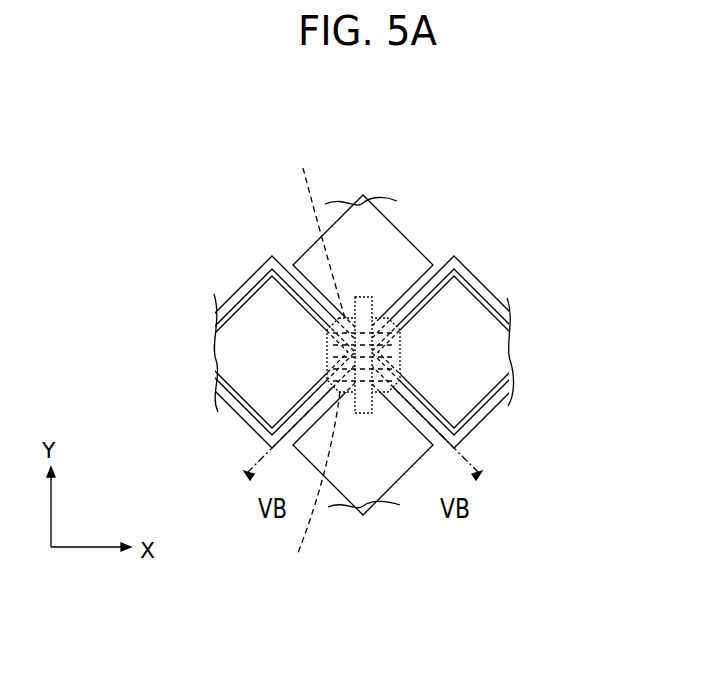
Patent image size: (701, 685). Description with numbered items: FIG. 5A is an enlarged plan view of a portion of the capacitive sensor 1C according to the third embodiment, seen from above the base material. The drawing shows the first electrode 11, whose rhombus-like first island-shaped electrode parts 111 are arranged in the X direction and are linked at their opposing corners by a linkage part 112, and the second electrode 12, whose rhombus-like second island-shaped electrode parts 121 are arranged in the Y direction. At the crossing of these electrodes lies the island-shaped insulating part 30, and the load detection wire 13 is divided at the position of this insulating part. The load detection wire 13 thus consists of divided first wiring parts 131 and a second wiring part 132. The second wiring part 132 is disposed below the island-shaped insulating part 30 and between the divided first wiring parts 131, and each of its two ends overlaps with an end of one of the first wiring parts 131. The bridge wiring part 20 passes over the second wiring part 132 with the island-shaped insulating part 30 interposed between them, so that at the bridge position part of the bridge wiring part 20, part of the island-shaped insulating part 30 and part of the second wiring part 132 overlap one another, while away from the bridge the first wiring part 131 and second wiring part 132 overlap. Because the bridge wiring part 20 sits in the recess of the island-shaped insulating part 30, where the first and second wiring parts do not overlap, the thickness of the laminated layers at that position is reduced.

The capacitive sensor 1C is at (484, 154).
The first electrode 11 is at (467, 328).
The first island-shaped electrode part 111 is at (227, 313).
The linkage part 112 is at (400, 354).
The second electrode 12 is at (388, 473).
The second island-shaped electrode part 121 is at (413, 263).
The load detection wire 13 is at (454, 352).
The first wiring part 131 is at (272, 257).
The second wiring part 132 is at (508, 260).
The bridge wiring part 20 is at (368, 320).
The island-shaped insulating part 30 is at (327, 353).